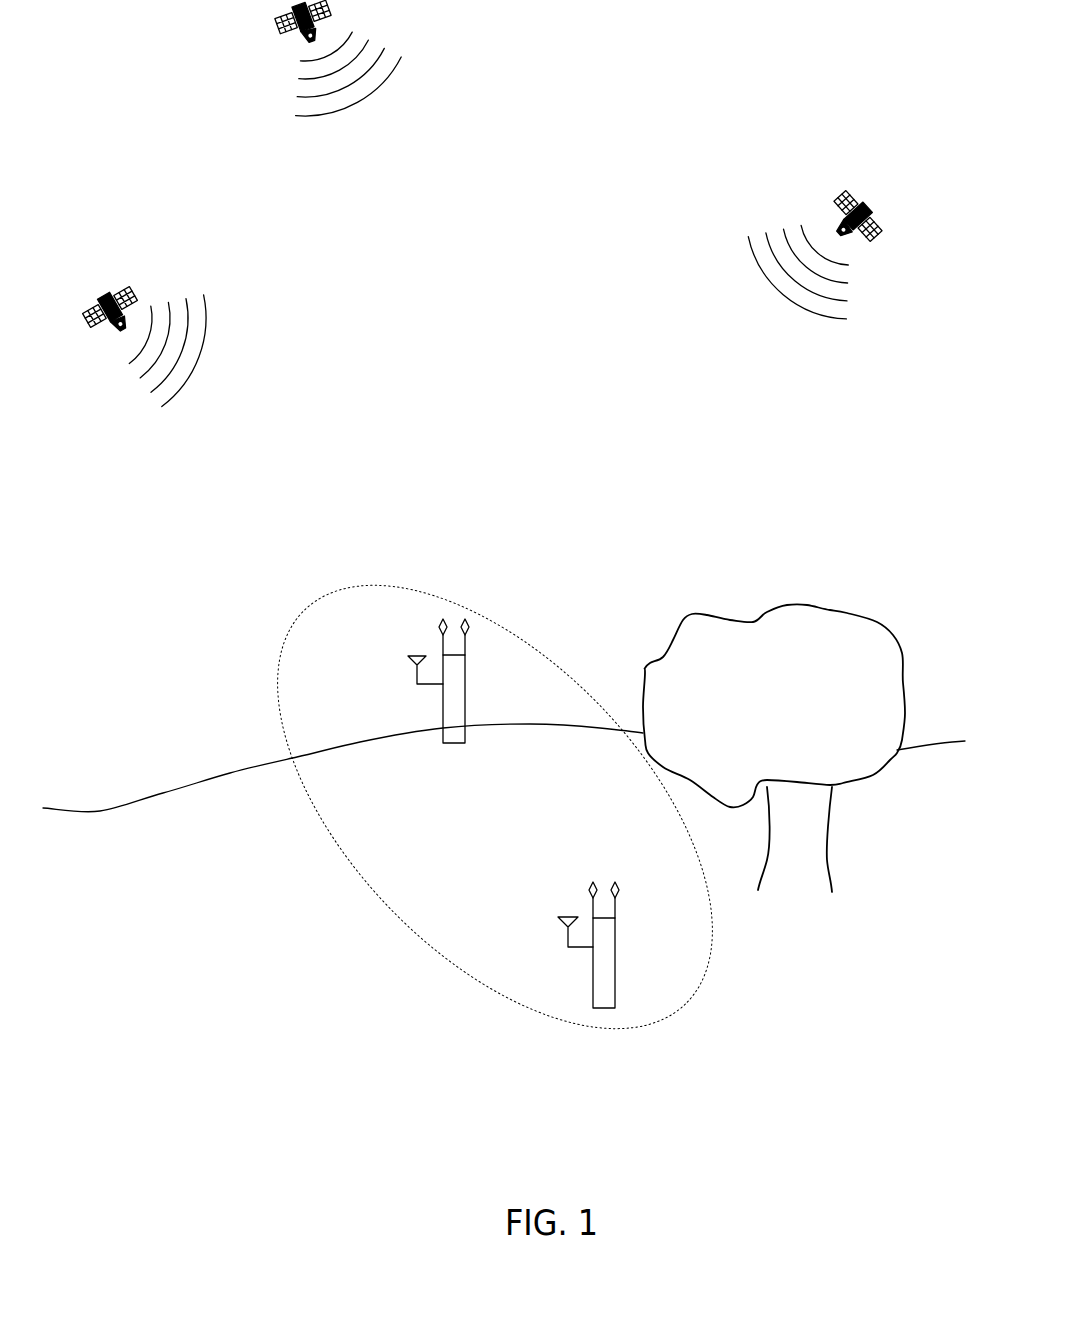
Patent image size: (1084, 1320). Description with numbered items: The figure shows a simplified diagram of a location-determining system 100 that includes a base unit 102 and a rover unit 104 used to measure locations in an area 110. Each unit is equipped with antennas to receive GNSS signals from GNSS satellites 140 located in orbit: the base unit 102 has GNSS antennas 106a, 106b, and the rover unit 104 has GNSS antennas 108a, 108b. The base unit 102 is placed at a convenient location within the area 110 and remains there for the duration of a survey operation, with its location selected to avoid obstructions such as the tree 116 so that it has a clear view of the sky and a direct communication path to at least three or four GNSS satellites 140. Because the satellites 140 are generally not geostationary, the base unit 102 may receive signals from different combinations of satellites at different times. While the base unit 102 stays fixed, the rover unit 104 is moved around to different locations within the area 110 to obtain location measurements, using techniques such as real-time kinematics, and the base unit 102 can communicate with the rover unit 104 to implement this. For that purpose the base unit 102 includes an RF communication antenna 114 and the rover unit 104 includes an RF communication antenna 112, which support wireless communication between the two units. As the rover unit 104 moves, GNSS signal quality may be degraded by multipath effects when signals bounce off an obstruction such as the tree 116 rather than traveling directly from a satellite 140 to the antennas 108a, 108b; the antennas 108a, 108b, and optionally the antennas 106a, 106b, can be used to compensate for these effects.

The location-determining system 100 is at (307, 612).
The base unit 102 is at (448, 745).
The rover unit 104 is at (618, 965).
The GNSS antenna 106a is at (443, 618).
The GNSS antenna 106b is at (465, 618).
The GNSS antenna 108a is at (593, 880).
The GNSS antenna 108b is at (615, 880).
The area 110 is at (240, 790).
The RF communication antenna 112 is at (563, 917).
The RF communication antenna 114 is at (413, 653).
The tree 116 is at (838, 610).
The GNSS satellites 140 is at (285, 28).